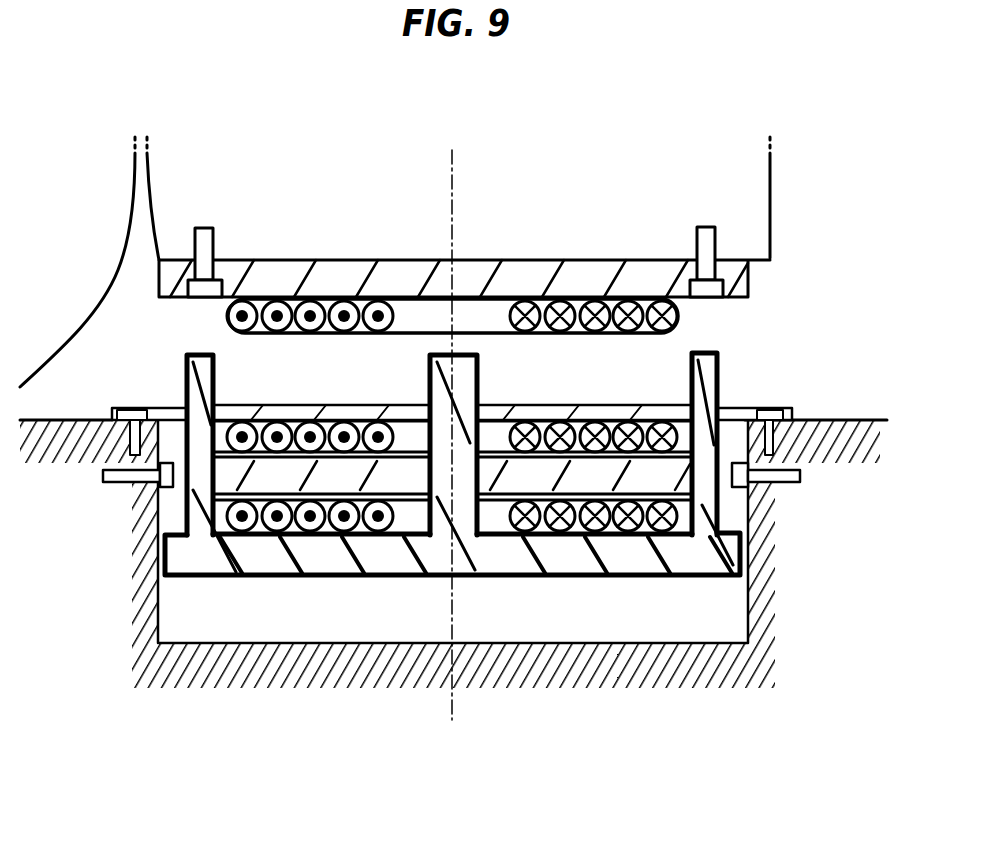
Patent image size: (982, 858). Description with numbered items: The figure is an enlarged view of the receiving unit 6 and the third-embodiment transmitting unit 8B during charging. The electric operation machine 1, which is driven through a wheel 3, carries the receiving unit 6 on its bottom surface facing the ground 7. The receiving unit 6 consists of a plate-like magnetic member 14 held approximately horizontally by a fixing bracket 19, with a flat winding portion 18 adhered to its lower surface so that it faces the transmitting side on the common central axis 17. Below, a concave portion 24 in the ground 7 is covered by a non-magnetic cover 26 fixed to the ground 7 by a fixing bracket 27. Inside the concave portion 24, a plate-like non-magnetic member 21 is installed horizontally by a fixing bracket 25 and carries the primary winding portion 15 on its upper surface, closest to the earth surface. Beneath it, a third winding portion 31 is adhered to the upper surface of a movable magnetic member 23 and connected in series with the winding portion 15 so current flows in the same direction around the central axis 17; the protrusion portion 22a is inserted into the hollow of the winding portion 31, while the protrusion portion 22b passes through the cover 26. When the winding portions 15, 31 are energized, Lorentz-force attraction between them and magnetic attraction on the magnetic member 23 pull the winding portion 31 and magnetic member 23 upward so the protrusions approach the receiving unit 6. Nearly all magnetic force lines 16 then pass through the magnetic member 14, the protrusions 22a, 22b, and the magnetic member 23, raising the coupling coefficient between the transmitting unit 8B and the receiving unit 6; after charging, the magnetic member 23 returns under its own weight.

The electric operation machine 1 is at (772, 190).
The wheel 3 is at (112, 285).
The receiving unit 6 is at (496, 268).
The ground 7 is at (67, 418).
The transmitting unit 8B is at (443, 518).
The magnetic member 14 is at (607, 267).
The winding portion 15 is at (343, 440).
The magnetic force lines 16 is at (407, 277).
The central axis 17 is at (450, 187).
The winding portion 18 is at (345, 338).
The fixing bracket 19 is at (203, 232).
The non-magnetic member 21 is at (283, 470).
The protrusion portion 22a is at (428, 400).
The protrusion portion 22b is at (720, 368).
The magnetic member 23 is at (575, 575).
The concave portion 24 is at (755, 592).
The fixing bracket 25 is at (115, 483).
The cover 26 is at (512, 405).
The fixing bracket 27 is at (772, 405).
The winding portion 31 is at (378, 517).